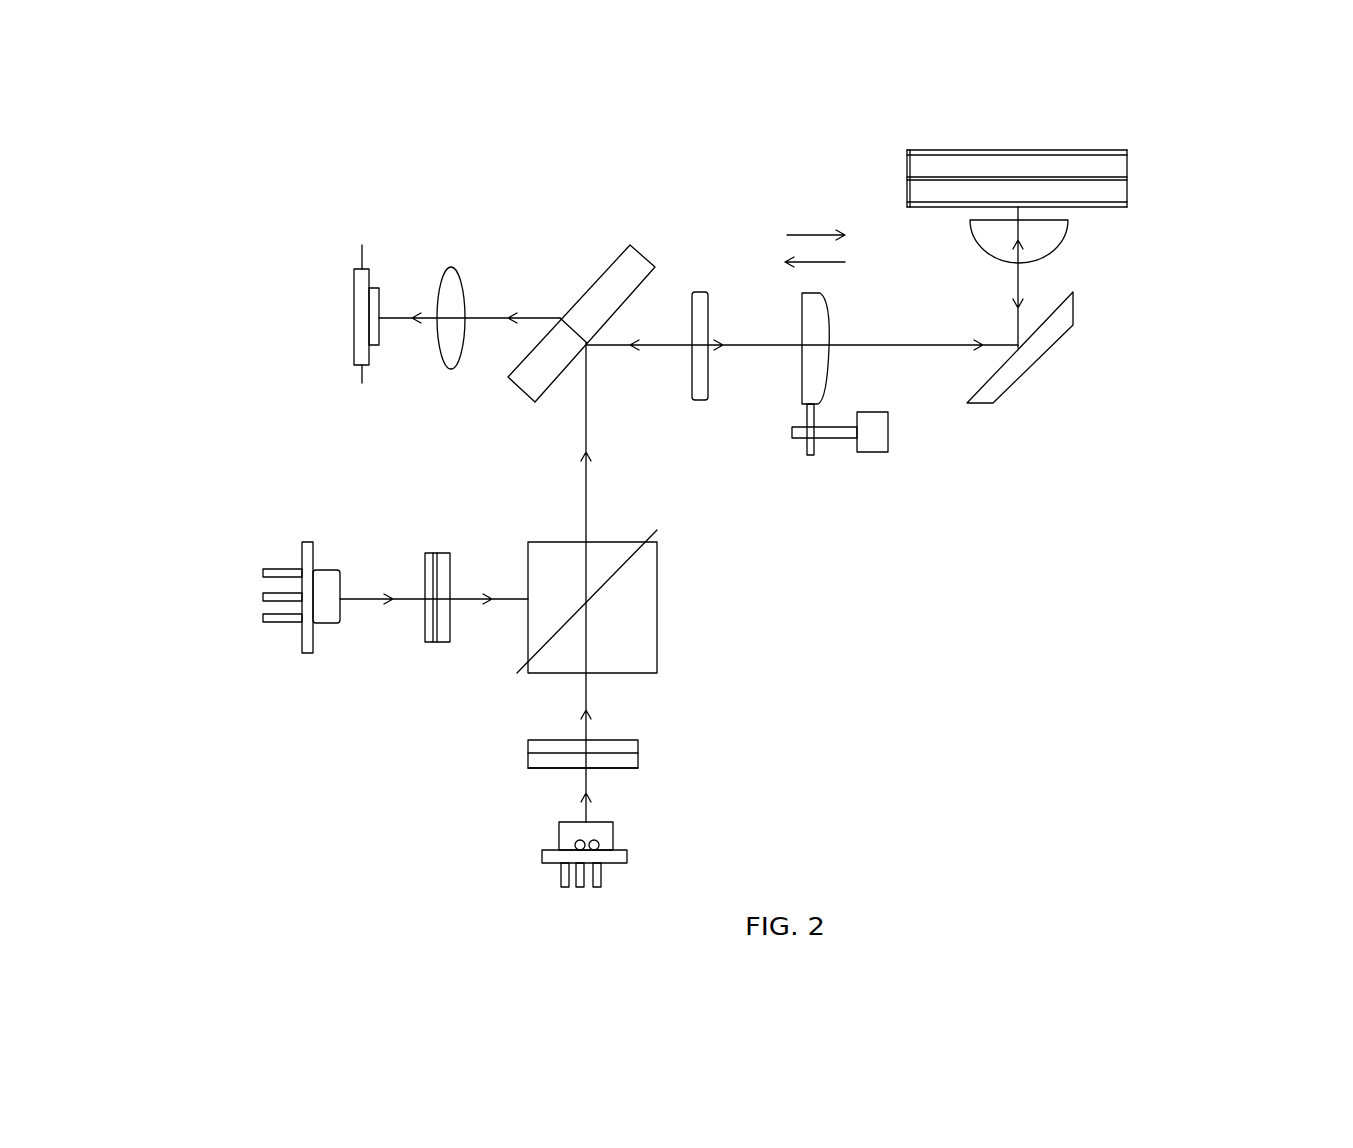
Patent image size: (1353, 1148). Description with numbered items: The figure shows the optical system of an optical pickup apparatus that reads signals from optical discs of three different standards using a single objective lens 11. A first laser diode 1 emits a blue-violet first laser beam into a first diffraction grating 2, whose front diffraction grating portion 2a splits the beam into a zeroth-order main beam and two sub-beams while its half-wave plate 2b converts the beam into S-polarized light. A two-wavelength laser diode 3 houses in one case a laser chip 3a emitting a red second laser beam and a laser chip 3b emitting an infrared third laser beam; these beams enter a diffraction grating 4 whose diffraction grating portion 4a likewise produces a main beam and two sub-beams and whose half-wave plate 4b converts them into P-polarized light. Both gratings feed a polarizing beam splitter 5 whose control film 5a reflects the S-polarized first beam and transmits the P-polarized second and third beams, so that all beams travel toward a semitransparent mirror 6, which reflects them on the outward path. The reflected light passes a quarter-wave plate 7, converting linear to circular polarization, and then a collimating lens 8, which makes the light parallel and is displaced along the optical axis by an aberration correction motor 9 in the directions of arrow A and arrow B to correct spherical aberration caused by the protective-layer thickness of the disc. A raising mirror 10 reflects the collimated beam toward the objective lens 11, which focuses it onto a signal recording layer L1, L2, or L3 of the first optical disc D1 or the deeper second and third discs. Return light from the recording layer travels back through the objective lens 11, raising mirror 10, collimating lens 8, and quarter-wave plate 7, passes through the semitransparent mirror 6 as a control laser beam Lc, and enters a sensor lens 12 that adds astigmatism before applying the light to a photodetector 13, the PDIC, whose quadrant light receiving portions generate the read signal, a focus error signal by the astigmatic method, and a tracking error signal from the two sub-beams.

The first laser diode 1 is at (328, 623).
The first diffraction grating 2 is at (473, 596).
The diffraction grating portion 2a is at (425, 642).
The half-wave plate 2b is at (440, 642).
The two-wavelength laser diode 3 is at (701, 855).
The laser chip 3a is at (597, 852).
The laser chip 3b is at (574, 843).
The diffraction grating 4 is at (688, 772).
The diffraction grating portion 4a is at (540, 768).
The half-wave plate 4b is at (530, 745).
The polarizing beam splitter 5 is at (761, 601).
The control film 5a is at (630, 568).
The semitransparent mirror 6 is at (630, 245).
The quarter-wave plate 7 is at (700, 292).
The collimating lens 8 is at (813, 310).
The aberration correction motor 9 is at (882, 445).
The raising mirror 10 is at (1057, 330).
The objective lens 11 is at (1060, 233).
The sensor lens 12 is at (450, 268).
The photodetector 13 is at (358, 318).
The signal recording layer L1 is at (1100, 202).
The signal recording layer L2 is at (1107, 180).
The signal recording layer L3 is at (1105, 150).
The first optical disc D1 is at (1024, 150).
The control laser beam Lc is at (488, 318).
The arrow A is at (824, 235).
The arrow B is at (804, 262).